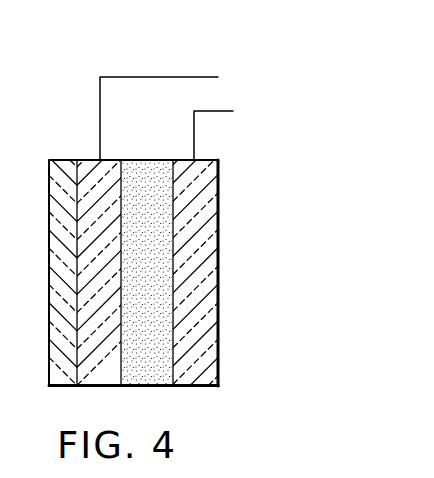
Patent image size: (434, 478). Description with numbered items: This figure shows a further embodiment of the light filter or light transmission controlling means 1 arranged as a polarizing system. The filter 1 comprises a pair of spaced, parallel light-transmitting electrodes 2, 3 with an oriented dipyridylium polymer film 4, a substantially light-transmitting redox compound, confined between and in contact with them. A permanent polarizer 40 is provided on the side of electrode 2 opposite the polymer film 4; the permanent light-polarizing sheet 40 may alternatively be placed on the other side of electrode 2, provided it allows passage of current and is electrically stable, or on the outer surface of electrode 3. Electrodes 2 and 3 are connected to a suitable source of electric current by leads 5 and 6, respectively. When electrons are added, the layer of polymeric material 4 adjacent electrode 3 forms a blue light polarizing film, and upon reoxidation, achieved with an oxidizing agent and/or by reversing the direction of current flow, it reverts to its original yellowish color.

The light filter 1 is at (30, 278).
The electrode 2 is at (90, 167).
The electrode 3 is at (205, 167).
The oriented dipyridylium polymer film 4 is at (138, 170).
The lead 5 is at (100, 112).
The lead 6 is at (194, 128).
The permanent polarizer 40 is at (55, 192).